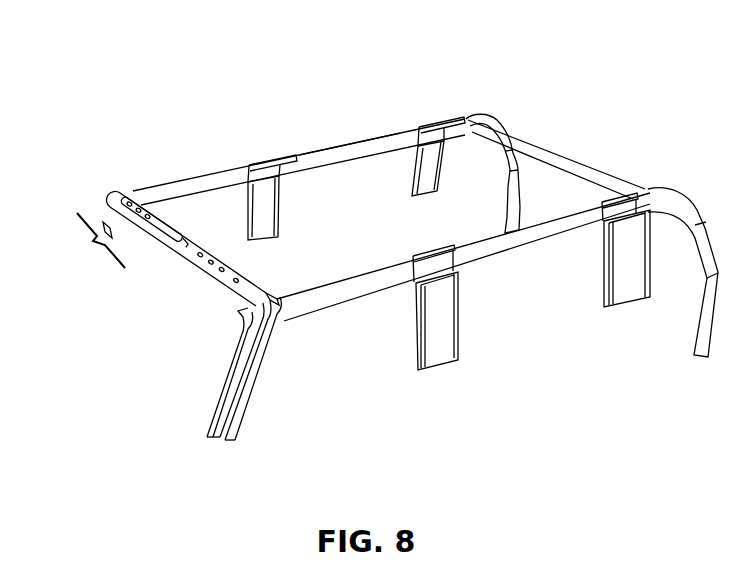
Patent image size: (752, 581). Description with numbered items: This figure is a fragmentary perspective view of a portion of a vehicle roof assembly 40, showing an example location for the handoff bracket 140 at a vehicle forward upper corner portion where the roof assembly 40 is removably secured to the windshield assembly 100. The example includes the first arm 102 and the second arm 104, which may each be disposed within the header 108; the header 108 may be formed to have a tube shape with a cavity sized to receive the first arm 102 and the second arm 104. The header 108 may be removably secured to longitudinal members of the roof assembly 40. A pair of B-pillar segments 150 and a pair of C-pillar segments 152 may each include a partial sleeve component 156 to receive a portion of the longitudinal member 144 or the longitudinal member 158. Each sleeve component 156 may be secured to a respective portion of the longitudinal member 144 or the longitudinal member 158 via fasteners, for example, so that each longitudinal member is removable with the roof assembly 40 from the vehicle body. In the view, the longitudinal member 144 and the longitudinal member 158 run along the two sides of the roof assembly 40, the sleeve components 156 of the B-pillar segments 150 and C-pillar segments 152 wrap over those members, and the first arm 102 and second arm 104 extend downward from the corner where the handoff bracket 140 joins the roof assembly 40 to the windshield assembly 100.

The roof assembly 40 is at (357, 138).
The windshield assembly 100 is at (133, 187).
The first arm 102 is at (156, 192).
The second arm 104 is at (247, 430).
The header 108 is at (207, 437).
The handoff bracket 140 is at (122, 245).
The longitudinal member 144 is at (213, 178).
The B-pillar segments 150 is at (283, 205).
The C-pillar segments 152 is at (441, 158).
The partial sleeve component 156 is at (278, 160).
The longitudinal member 158 is at (348, 304).